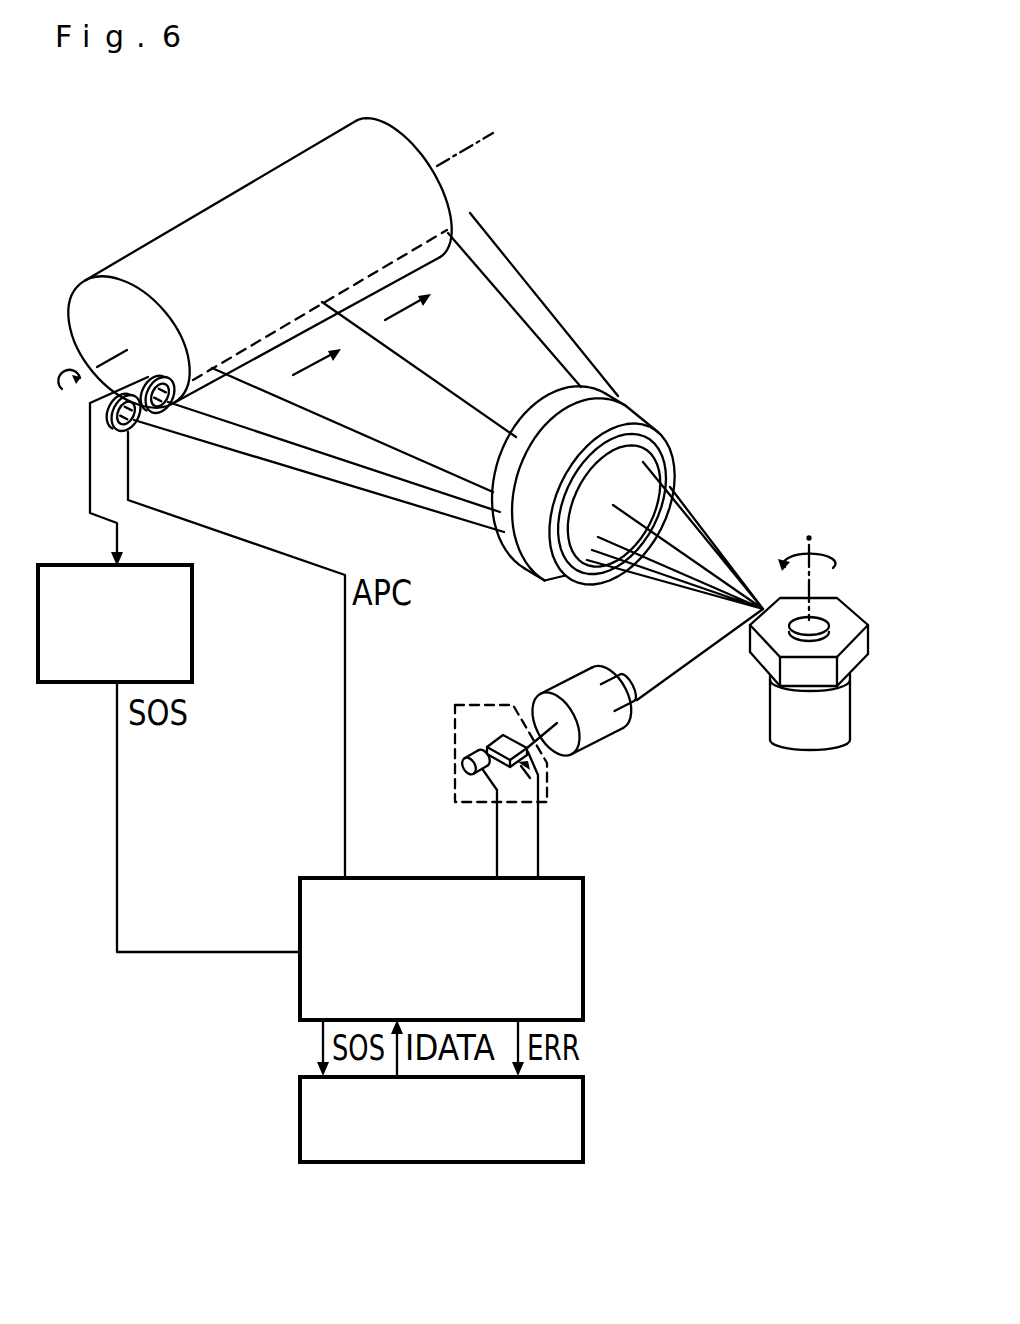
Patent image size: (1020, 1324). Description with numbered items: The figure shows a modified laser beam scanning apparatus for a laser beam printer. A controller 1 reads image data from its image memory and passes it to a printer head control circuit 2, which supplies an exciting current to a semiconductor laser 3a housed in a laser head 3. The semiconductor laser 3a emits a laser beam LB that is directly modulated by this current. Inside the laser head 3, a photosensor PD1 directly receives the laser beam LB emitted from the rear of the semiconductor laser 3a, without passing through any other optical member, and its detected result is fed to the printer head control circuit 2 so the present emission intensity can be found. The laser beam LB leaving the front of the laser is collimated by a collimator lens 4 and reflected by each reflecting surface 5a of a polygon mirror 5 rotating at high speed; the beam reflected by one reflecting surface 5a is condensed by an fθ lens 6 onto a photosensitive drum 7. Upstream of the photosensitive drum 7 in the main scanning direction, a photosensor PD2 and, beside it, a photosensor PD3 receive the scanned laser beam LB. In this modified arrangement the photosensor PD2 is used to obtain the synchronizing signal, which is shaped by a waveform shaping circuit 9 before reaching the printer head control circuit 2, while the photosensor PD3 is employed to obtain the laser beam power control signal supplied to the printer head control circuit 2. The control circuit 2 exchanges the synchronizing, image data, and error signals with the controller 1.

The controller 1 is at (583, 1118).
The printer head control circuit 2 is at (583, 920).
The laser head 3 is at (467, 702).
The semiconductor laser 3a is at (507, 736).
The collimator lens 4 is at (610, 737).
The polygon mirror 5 is at (843, 615).
The reflecting surface 5a is at (813, 680).
The fθ lens 6 is at (622, 398).
The photosensitive drum 7 is at (245, 195).
The waveform shaping circuit 9 is at (192, 607).
The photosensor PD1 is at (458, 744).
The photosensor PD2 is at (178, 424).
The photosensor PD3 is at (128, 432).
The laser beam LB is at (672, 676).